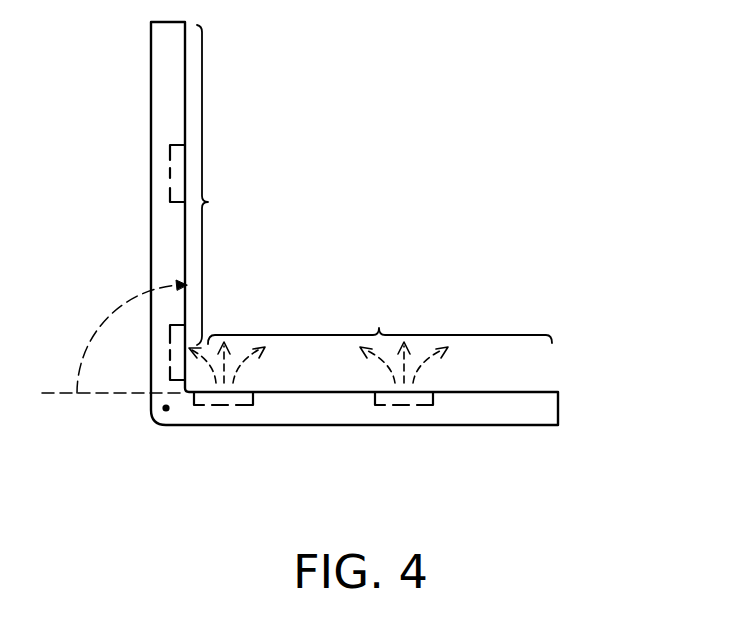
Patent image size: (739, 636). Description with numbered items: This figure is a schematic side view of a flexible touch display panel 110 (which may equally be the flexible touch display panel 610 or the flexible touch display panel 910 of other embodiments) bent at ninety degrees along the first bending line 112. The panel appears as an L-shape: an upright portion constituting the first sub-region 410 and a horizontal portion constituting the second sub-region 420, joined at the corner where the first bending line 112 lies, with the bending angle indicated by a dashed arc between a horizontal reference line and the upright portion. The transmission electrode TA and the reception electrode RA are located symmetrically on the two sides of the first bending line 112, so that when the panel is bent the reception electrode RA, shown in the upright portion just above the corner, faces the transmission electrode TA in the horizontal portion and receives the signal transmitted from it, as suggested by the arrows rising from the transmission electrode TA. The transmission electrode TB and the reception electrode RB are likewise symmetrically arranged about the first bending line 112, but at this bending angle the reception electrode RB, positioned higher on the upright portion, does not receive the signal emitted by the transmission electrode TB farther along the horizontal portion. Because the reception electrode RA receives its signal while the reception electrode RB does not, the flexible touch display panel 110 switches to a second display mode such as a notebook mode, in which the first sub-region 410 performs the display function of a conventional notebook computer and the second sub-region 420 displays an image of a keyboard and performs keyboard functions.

The flexible touch display panel 110 is at (374, 254).
The flexible touch display panel 610 is at (374, 254).
The flexible touch display panel 910 is at (525, 426).
The first bending line 112 is at (166, 412).
The first sub-region 410 is at (226, 185).
The second sub-region 420 is at (380, 318).
The reception electrode RA is at (169, 353).
The reception electrode RB is at (169, 172).
The transmission electrode TA is at (224, 408).
The transmission electrode TB is at (404, 408).